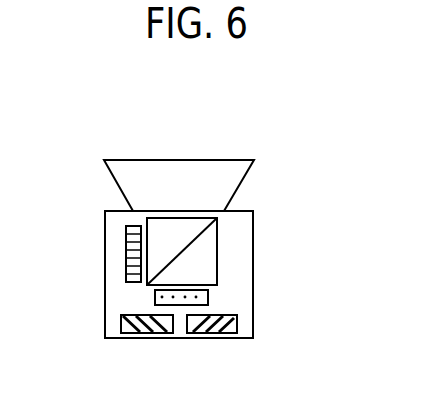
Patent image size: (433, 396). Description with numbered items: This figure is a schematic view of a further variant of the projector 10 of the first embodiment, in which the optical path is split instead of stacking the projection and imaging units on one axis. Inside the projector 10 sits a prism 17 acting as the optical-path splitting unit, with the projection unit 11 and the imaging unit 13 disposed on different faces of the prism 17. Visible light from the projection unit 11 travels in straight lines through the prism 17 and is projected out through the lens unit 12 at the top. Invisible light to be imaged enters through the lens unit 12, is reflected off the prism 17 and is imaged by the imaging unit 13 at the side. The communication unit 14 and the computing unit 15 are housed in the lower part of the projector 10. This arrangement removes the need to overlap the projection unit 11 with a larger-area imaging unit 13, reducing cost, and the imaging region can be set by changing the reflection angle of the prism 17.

The projector 10 is at (264, 329).
The projection unit 11 is at (253, 297).
The lens unit 12 is at (246, 192).
The imaging unit 13 is at (126, 253).
The communication unit 14 is at (207, 338).
The computing unit 15 is at (150, 338).
The prism 17 is at (253, 251).